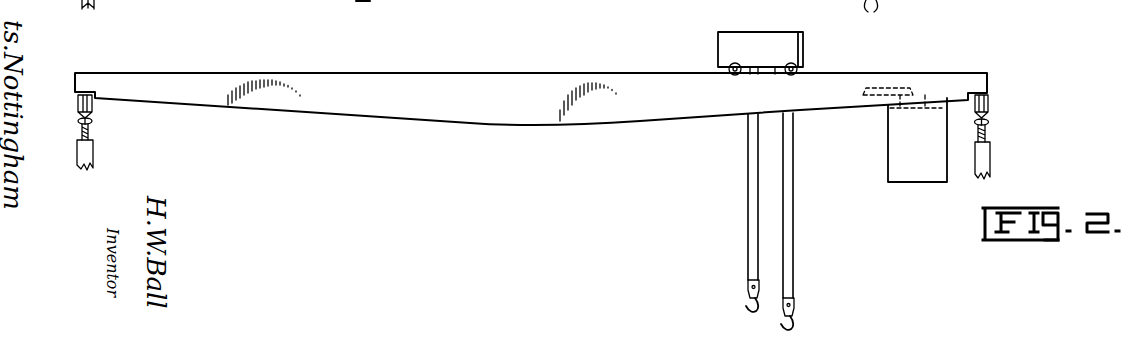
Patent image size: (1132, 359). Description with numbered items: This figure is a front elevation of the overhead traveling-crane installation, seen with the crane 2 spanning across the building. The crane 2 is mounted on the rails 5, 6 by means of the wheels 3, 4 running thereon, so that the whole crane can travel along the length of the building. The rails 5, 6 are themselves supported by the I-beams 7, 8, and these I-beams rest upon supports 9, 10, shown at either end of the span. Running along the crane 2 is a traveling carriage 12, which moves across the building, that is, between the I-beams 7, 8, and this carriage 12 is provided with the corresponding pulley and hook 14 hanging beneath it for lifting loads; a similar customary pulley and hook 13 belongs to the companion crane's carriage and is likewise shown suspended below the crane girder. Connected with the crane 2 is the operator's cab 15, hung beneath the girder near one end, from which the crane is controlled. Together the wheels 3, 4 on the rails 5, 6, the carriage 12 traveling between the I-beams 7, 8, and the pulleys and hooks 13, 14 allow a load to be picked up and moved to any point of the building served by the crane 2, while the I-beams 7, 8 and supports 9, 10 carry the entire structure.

The crane 2 is at (340, 103).
The wheel 3 is at (78, 104).
The wheel 4 is at (988, 103).
The rail 5 is at (93, 119).
The rail 6 is at (988, 122).
The I-beam 7 is at (92, 135).
The I-beam 8 is at (988, 138).
The support 9 is at (92, 160).
The support 10 is at (984, 162).
The carriage 12 is at (764, 42).
The pulley and hook 13 is at (795, 305).
The pulley and hook 14 is at (748, 293).
The operator's cab 15 is at (898, 143).